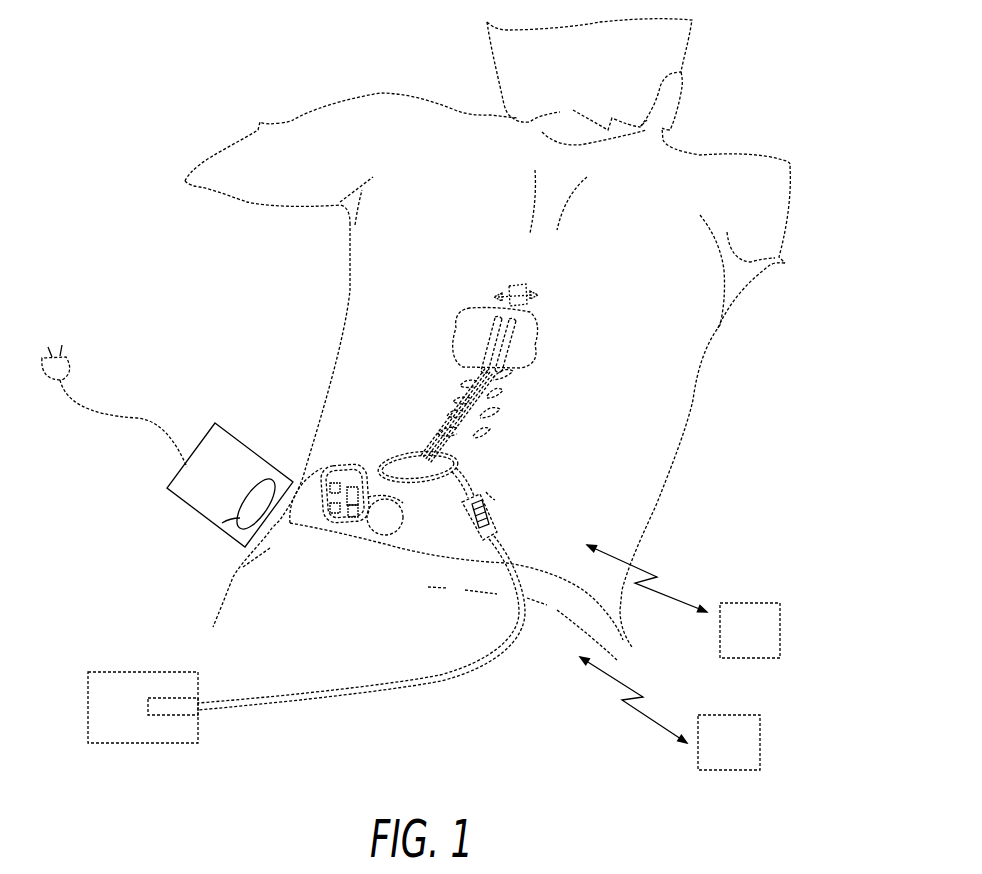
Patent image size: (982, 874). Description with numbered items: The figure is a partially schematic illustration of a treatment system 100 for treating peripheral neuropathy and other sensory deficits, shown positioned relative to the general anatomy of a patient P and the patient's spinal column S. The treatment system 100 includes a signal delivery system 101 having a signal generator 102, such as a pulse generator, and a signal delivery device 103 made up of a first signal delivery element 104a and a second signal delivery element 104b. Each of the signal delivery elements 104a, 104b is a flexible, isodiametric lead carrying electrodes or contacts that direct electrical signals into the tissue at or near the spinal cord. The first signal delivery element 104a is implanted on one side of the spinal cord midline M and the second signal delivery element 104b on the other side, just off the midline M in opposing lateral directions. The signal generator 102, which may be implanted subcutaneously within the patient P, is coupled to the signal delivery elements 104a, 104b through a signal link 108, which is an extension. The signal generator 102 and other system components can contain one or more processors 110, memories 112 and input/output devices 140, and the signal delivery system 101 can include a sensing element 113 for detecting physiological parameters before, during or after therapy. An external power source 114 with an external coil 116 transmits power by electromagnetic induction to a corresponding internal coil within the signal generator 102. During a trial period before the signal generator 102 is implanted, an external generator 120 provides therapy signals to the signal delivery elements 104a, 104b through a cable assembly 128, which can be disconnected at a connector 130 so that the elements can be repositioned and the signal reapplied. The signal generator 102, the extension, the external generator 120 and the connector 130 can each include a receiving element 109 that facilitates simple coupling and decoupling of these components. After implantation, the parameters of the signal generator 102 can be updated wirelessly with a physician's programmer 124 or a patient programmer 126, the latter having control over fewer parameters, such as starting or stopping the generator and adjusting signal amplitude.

The treatment system 100 is at (177, 343).
The signal delivery system 101 is at (423, 442).
The signal generator 102 is at (370, 480).
The signal delivery device 103 is at (458, 306).
The first signal delivery element 104a is at (493, 342).
The second signal delivery element 104b is at (507, 342).
The signal link 108 is at (458, 459).
The receiving element 109 is at (483, 487).
The processor 110 is at (347, 463).
The memory 112 is at (330, 520).
The sensing element 113 is at (357, 527).
The external power source 114 is at (230, 430).
The external coil 116 is at (222, 523).
The external generator 120 is at (132, 670).
The physician's programmer 124 is at (757, 603).
The patient programmer 126 is at (733, 715).
The cable assembly 128 is at (430, 693).
The connector 130 is at (500, 518).
The input/output device 140 is at (380, 522).
The spinal cord midline M is at (523, 257).
The spinal column S is at (493, 417).
The patient P is at (663, 448).